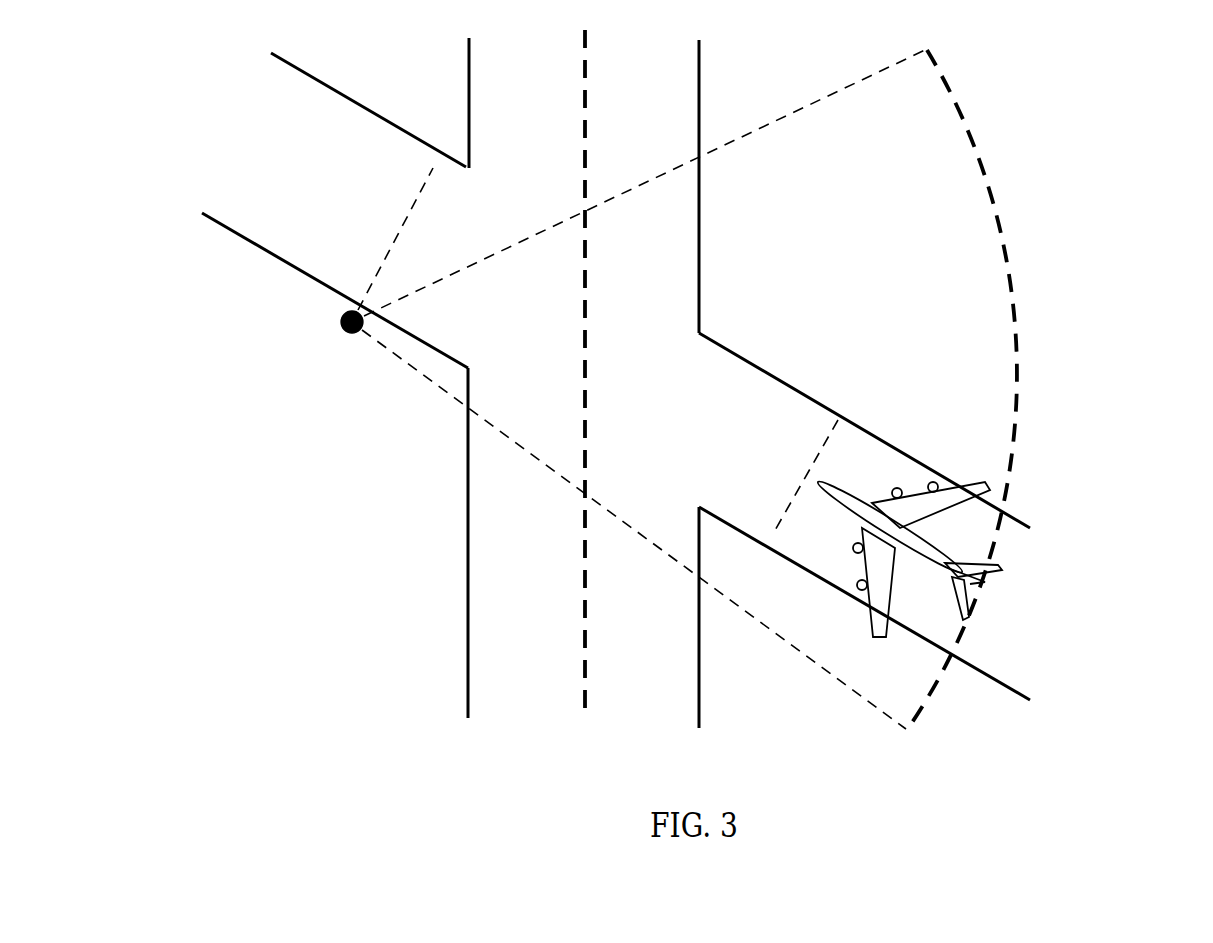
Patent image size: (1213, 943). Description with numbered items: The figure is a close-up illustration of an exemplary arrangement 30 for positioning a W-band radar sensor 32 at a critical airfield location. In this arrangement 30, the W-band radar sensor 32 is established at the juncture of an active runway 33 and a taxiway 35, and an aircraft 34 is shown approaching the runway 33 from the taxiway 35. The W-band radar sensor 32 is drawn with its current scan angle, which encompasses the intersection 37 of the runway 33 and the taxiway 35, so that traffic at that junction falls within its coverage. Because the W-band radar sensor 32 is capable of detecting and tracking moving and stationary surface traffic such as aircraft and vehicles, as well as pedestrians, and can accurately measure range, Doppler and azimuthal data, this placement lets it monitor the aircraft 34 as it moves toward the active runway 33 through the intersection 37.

The exemplary arrangement 30 is at (1118, 31).
The W-band radar sensor 32 is at (341, 320).
The active runway 33 is at (643, 113).
The aircraft 34 is at (935, 555).
The taxiway 35 is at (1020, 642).
The intersection 37 is at (700, 333).